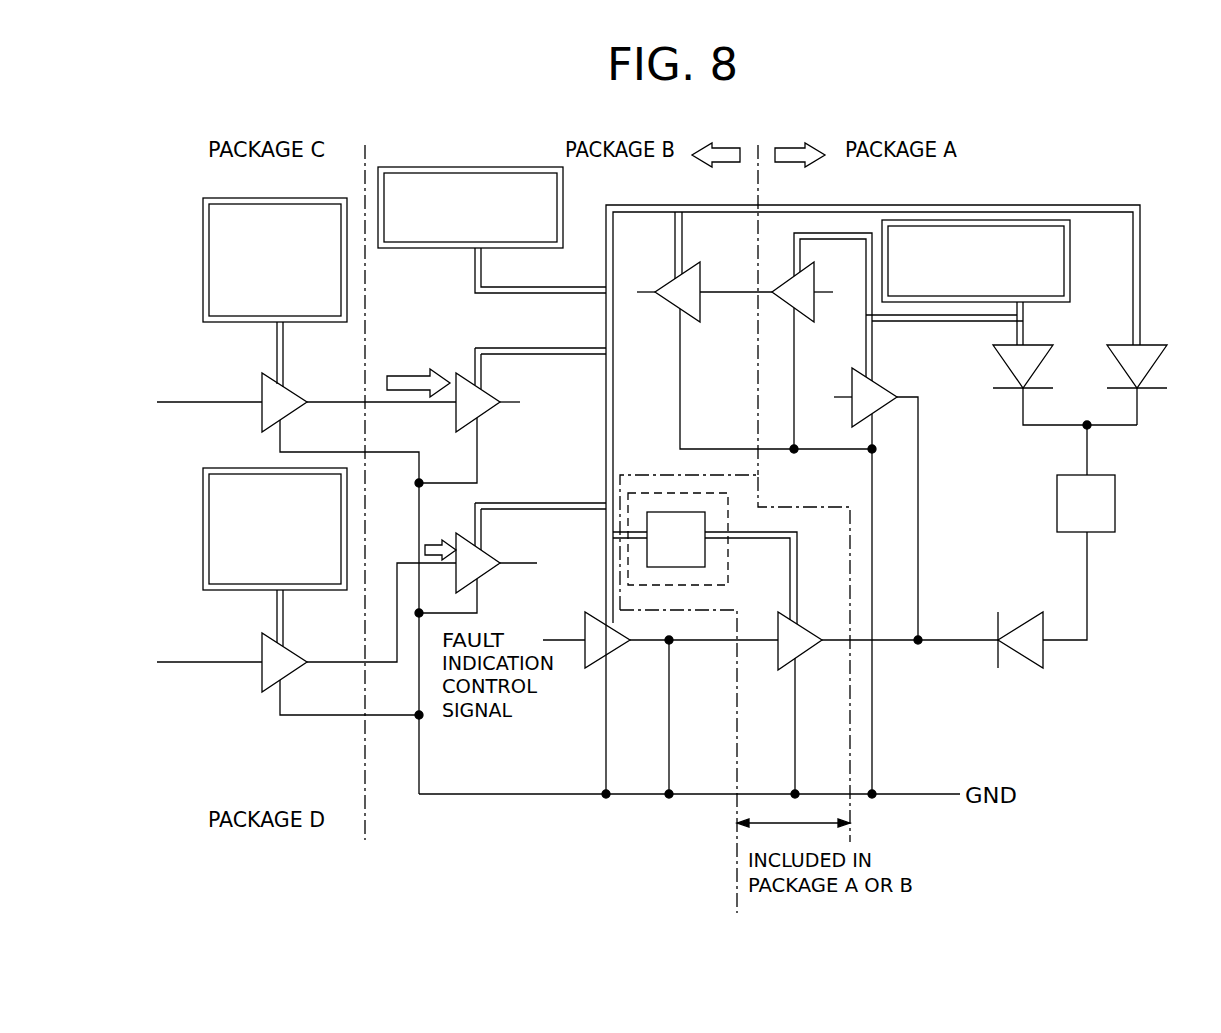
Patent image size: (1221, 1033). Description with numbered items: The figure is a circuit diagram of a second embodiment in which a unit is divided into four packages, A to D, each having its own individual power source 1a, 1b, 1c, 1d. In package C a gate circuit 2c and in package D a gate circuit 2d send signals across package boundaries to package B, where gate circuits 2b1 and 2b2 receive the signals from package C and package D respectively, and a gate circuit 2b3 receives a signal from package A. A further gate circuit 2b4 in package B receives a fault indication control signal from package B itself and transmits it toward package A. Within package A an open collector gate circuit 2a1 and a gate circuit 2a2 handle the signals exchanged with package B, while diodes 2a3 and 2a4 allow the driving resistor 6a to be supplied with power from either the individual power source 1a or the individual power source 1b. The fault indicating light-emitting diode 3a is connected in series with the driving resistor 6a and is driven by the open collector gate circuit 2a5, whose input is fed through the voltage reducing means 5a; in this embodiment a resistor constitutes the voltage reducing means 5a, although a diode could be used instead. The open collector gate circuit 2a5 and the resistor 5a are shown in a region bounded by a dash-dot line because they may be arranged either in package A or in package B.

The individual power source 1a is at (1070, 272).
The individual power source 1b is at (563, 216).
The individual power source 1c is at (327, 198).
The individual power source 1d is at (305, 590).
The open collector gate circuit 2a1 is at (880, 386).
The gate circuit 2a2 is at (812, 307).
The diode 2a3 is at (1035, 345).
The diode 2a4 is at (1150, 345).
The open collector gate circuit 2a5 is at (826, 611).
The gate circuit 2b1 is at (487, 415).
The gate circuit 2b2 is at (490, 556).
The gate circuit 2b3 is at (672, 281).
The gate circuit 2b4 is at (612, 650).
The gate circuit 2c is at (290, 392).
The gate circuit 2d is at (290, 672).
The fault indicating light-emitting diode 3a is at (1043, 660).
The voltage reducing means 5a is at (728, 560).
The LED driving resistor 6a is at (1115, 505).